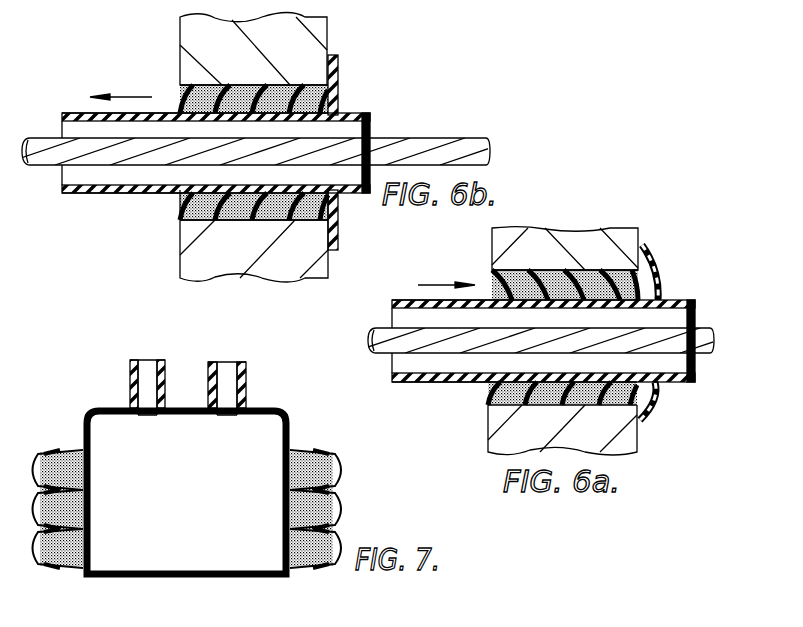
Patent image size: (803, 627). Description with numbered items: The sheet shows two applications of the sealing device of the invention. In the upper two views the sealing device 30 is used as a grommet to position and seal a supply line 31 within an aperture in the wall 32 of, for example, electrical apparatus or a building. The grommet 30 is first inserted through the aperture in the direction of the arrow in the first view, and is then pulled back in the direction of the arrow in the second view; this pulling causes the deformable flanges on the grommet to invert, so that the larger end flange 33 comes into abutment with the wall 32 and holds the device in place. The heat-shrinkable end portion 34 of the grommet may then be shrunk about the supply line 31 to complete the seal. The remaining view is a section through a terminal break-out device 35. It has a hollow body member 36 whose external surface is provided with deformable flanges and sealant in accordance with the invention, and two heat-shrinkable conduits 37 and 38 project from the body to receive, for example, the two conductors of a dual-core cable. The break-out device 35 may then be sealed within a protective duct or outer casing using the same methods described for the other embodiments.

In FIG. 6B, the sealing device 30 is at (148, 193).
In FIG. 6A, the sealing device 30 is at (470, 382).
In FIG. 6B, the supply line 31 is at (423, 148).
In FIG. 6A, the supply line 31 is at (685, 335).
In FIG. 6B, the wall 32 is at (200, 256).
In FIG. 6A, the wall 32 is at (516, 250).
In FIG. 6B, the larger end flange 33 is at (338, 90).
In FIG. 6A, the larger end flange 33 is at (652, 285).
In FIG. 6B, the heat-shrinkable end portion 34 is at (70, 193).
In FIG. 6A, the heat-shrinkable end portion 34 is at (405, 382).
In FIG. 7, the terminal break-out device 35 is at (185, 418).
In FIG. 7, the hollow body member 36 is at (290, 512).
In FIG. 7, the heat-shrinkable conduit 37 is at (160, 382).
In FIG. 7, the heat-shrinkable conduit 38 is at (246, 376).